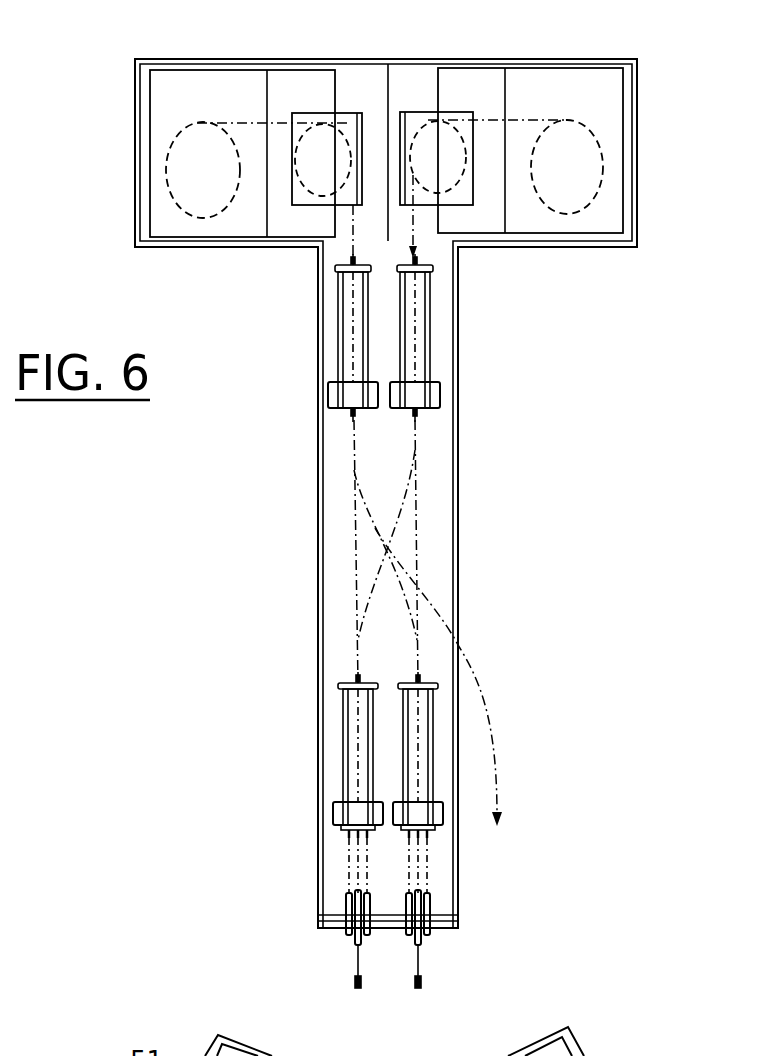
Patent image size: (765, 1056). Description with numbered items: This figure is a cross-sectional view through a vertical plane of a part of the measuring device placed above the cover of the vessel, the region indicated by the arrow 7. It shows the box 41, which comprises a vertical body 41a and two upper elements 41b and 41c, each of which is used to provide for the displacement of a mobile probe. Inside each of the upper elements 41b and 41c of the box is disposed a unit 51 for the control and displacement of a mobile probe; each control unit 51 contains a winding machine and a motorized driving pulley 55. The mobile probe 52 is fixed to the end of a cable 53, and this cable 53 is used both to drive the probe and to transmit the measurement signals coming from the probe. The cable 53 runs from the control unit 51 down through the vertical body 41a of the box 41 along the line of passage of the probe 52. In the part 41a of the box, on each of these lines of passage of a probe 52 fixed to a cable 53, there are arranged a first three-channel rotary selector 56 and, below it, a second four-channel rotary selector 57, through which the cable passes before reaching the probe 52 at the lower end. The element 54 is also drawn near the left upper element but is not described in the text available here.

The direction arrow 7 is at (389, 48).
The box 41 is at (298, 452).
The vertical body 41a is at (460, 465).
The upper element of the box 41b is at (167, 248).
The upper element of the box 41c is at (600, 247).
The control and displacement unit 51 is at (165, 123).
The mobile probe 52 is at (411, 986).
The cable 53 is at (247, 122).
The opening edge 54 is at (233, 190).
The motorized driving pulley 55 is at (305, 163).
The first three-channel rotary selector 56 is at (408, 333).
The second four-channel rotary selector 57 is at (410, 698).